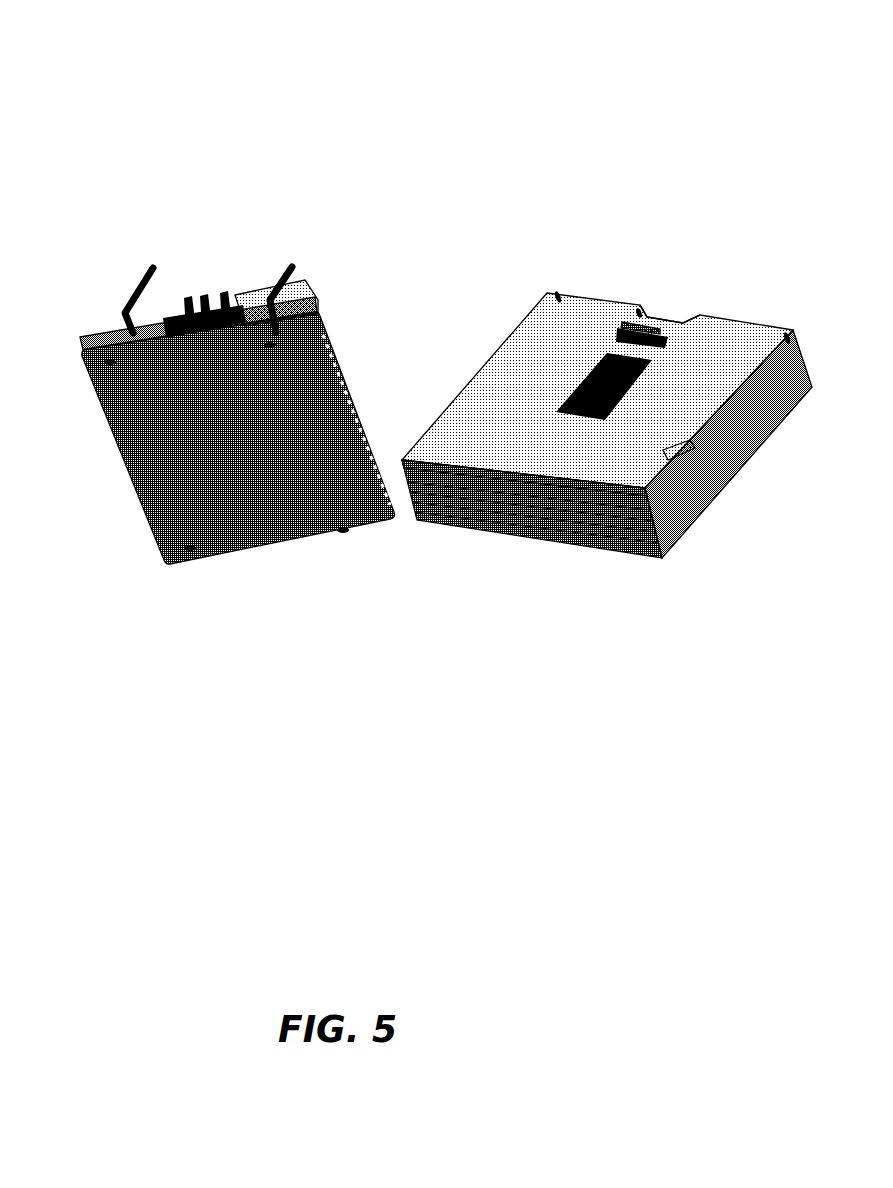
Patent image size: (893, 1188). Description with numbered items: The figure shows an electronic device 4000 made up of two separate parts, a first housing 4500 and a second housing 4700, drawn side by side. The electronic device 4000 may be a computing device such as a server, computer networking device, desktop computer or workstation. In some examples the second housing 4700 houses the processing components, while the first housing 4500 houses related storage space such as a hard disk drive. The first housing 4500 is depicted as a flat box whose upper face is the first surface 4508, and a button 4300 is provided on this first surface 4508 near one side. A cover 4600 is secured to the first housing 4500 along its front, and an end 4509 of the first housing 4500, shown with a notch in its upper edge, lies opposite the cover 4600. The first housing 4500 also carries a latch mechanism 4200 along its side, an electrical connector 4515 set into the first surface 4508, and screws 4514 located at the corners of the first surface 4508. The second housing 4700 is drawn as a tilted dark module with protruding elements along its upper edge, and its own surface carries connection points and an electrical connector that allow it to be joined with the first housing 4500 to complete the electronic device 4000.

The electronic device 4000 is at (742, 70).
The second housing 4700 is at (343, 380).
The first housing 4500 is at (443, 408).
The latch mechanism 4200 is at (708, 473).
The cover 4600 is at (532, 509).
The first surface 4508 is at (521, 446).
The end 4509 is at (667, 317).
The screws 4514 is at (578, 332).
The electrical connector 4515 is at (657, 350).
The button 4300 is at (687, 435).